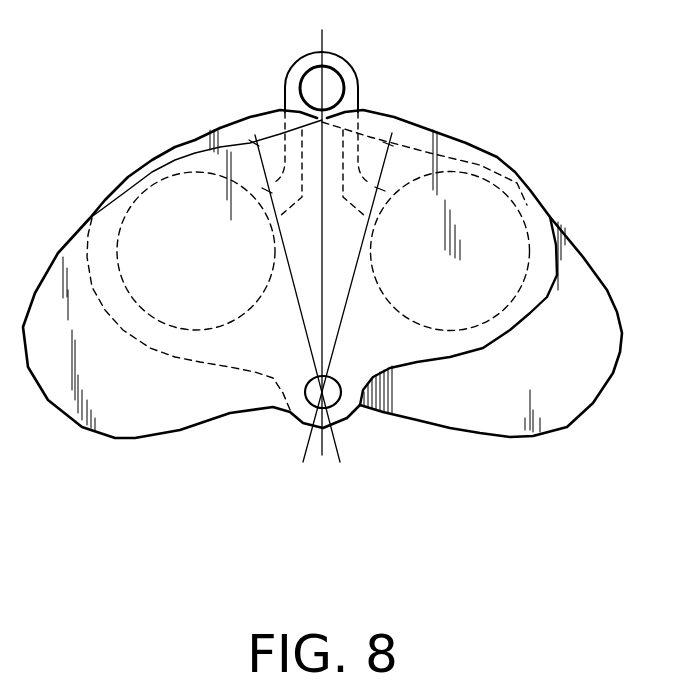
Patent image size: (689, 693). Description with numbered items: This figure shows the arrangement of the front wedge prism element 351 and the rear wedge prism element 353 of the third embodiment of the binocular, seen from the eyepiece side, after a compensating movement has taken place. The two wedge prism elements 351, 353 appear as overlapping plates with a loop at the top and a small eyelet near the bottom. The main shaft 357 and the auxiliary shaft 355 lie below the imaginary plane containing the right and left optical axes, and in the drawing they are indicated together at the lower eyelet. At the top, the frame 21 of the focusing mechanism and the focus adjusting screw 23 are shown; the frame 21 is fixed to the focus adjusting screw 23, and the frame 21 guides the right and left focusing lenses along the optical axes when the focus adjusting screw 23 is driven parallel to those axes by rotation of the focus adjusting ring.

The frame 21 is at (286, 82).
The focus adjusting screw 23 is at (344, 80).
The front wedge prism element 351 is at (507, 162).
The rear wedge prism element 353 is at (155, 152).
The auxiliary shaft 355 is at (398, 448).
The main shaft 357 is at (338, 417).